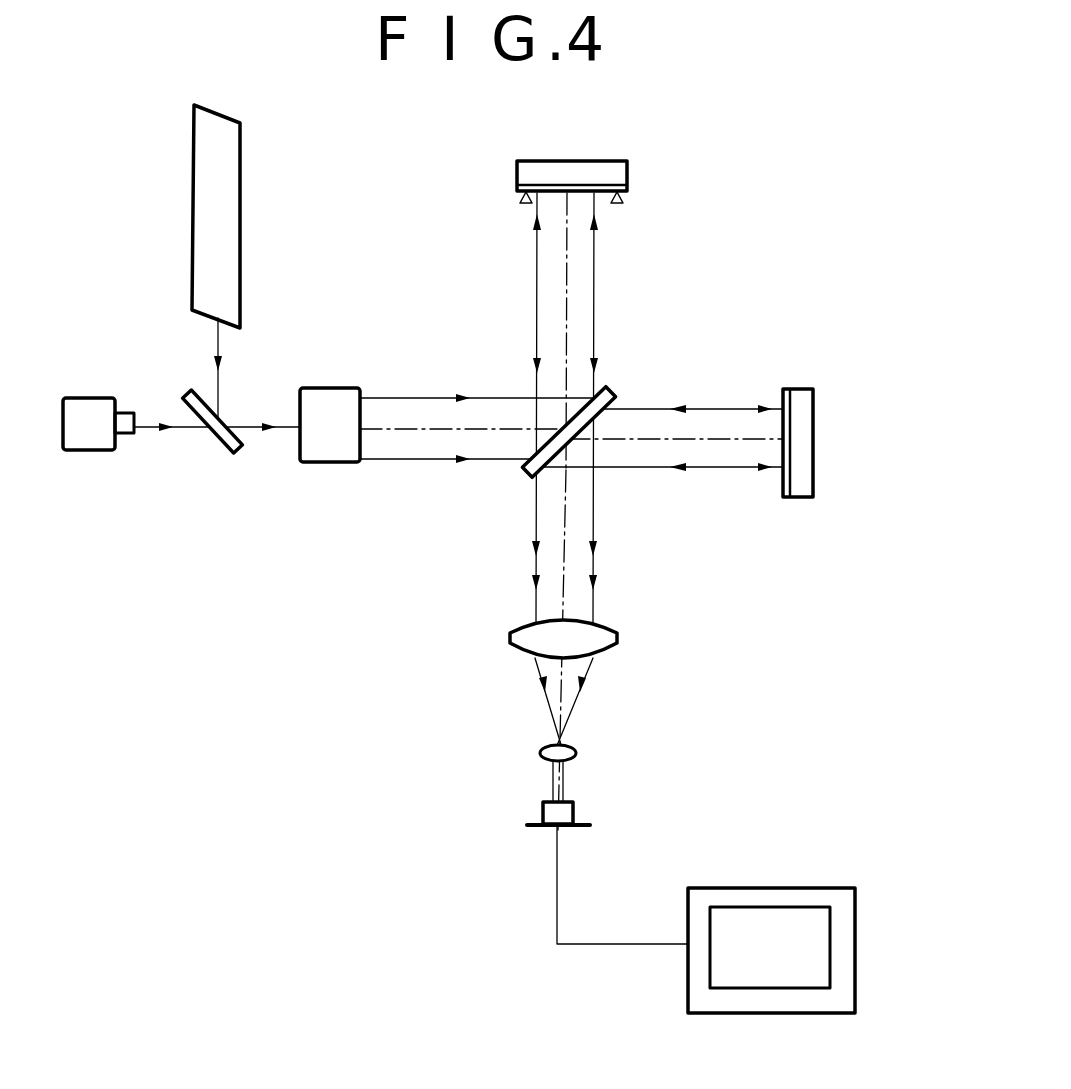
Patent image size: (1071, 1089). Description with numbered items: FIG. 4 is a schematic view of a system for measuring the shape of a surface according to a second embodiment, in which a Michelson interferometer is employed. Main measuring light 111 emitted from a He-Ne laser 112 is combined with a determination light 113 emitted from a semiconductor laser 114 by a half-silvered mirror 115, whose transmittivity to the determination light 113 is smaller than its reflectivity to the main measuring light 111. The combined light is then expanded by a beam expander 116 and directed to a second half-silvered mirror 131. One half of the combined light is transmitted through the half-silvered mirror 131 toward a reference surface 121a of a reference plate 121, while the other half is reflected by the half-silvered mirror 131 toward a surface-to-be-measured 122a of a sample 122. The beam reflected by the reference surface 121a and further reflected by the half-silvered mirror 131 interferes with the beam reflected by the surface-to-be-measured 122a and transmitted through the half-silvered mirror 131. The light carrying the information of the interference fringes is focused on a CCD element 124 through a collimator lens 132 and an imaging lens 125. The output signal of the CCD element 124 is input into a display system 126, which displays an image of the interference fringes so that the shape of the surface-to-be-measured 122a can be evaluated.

The main measuring light 111 is at (218, 338).
The He-Ne laser 112 is at (227, 189).
The determination light 113 is at (178, 425).
The semiconductor laser 114 is at (103, 443).
The half-silvered mirror 115 is at (236, 454).
The beam expander 116 is at (347, 389).
The reference plate 121 is at (813, 424).
The reference surface 121a is at (783, 485).
The sample 122 is at (627, 164).
The surface-to-be-measured 122a is at (603, 194).
The CCD element 124 is at (542, 809).
The imaging lens 125 is at (540, 753).
The display system 126 is at (807, 888).
The half-silvered mirror 131 is at (610, 391).
The collimator lens 132 is at (617, 638).